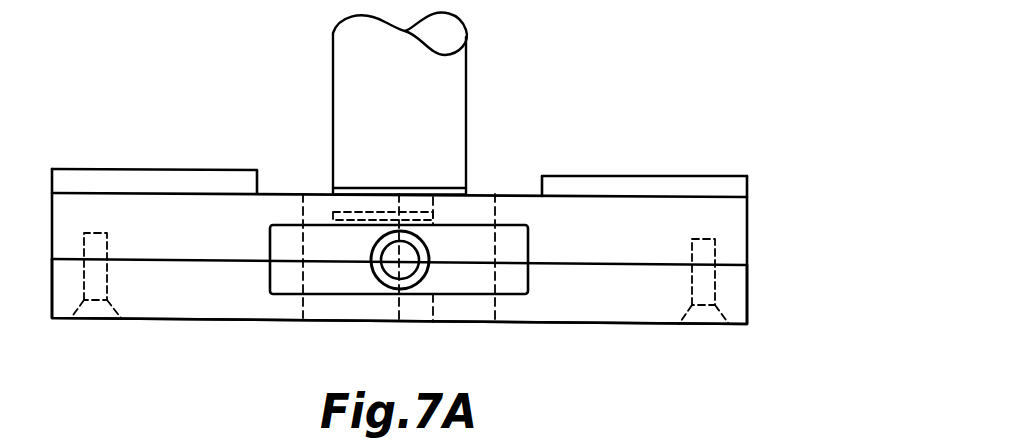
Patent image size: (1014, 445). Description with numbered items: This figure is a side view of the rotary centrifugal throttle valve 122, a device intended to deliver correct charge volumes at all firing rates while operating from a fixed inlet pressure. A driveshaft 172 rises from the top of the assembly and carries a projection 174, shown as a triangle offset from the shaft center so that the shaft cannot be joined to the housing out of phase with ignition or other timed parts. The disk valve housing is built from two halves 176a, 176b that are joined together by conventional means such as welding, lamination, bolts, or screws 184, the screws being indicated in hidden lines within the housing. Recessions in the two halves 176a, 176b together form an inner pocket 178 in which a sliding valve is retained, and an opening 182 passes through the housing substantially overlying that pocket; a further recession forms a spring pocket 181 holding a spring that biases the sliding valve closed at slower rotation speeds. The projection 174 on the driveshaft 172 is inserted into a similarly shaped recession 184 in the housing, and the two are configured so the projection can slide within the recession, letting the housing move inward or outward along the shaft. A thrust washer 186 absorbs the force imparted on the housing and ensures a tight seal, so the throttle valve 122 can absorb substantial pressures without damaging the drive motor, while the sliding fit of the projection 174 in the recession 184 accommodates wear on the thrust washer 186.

The rotary centrifugal throttle valve 122 is at (645, 146).
The driveshaft 172 is at (466, 85).
The projection 174 is at (333, 190).
The disk valve housing half 176a is at (741, 300).
The disk valve housing half 176b is at (740, 238).
The inner pocket 178 is at (338, 272).
The spring pocket 181 is at (428, 278).
The opening 182 is at (320, 215).
The recession 184 is at (378, 207).
The thrust washer 186 is at (749, 192).